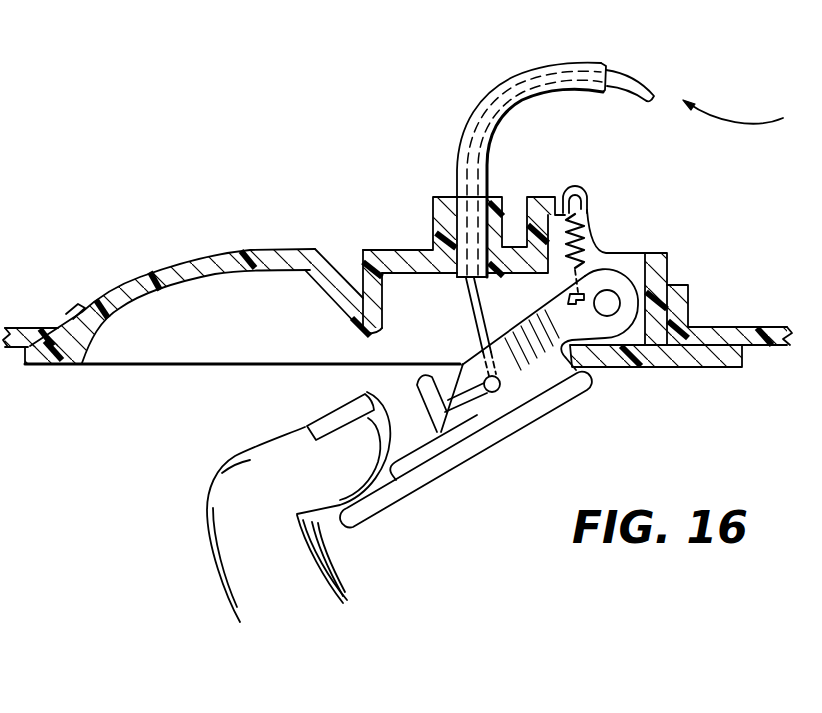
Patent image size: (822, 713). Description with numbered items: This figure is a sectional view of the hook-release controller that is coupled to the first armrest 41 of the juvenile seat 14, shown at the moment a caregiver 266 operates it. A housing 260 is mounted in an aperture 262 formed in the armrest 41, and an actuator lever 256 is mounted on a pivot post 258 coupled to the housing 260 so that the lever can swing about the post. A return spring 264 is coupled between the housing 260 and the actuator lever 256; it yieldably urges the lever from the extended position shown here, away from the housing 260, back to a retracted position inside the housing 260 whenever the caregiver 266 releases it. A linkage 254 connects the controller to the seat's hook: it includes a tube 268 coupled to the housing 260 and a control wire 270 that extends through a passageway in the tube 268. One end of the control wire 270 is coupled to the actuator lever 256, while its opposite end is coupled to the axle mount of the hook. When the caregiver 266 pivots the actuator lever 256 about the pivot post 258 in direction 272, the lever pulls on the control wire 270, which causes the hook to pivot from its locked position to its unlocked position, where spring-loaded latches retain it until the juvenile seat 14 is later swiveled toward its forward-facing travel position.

The juvenile seat 14 is at (770, 351).
The first armrest 41 is at (35, 328).
The linkage 254 is at (475, 117).
The actuator lever 256 is at (368, 506).
The pivot post 258 is at (612, 301).
The housing 260 is at (186, 248).
The aperture 262 is at (82, 336).
The return spring 264 is at (583, 248).
The caregiver 266 is at (243, 530).
The tube 268 is at (538, 80).
The control wire 270 is at (640, 96).
The direction 272 is at (208, 337).